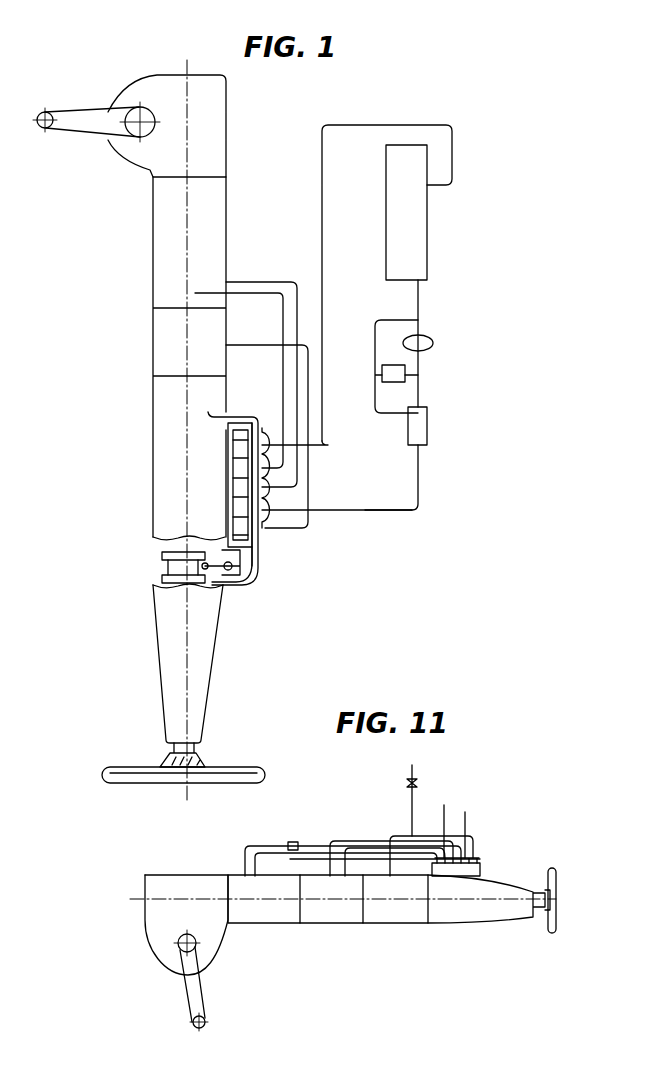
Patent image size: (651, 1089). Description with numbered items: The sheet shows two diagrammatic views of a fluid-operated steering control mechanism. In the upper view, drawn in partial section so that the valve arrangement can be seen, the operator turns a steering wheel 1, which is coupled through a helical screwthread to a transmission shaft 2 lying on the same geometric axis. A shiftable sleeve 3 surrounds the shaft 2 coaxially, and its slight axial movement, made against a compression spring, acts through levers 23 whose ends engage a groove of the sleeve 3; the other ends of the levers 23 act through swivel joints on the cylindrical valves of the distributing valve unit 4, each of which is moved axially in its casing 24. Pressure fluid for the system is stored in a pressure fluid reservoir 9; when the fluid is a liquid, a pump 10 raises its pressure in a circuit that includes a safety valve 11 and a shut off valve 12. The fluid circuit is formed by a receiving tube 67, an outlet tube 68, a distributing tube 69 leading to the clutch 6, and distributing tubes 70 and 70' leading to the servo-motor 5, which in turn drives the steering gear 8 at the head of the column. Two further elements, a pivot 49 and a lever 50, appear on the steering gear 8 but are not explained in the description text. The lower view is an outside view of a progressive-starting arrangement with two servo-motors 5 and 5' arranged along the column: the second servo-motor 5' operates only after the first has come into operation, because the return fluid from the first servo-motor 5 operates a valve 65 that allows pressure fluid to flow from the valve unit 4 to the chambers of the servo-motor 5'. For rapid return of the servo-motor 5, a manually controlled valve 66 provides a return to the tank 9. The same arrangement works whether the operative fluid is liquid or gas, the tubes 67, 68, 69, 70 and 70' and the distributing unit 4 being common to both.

In FIG. 1, the steering wheel 1 is at (226, 766).
In FIG. 11, the steering wheel 1 is at (552, 888).
In FIG. 1, the transmission shaft 2 is at (148, 548).
In FIG. 1, the shiftable sleeve 3 is at (214, 578).
In FIG. 1, the distributing valve unit 4 is at (236, 416).
In FIG. 11, the distributing valve unit 4 is at (486, 866).
In FIG. 1, the servo-motor 5 is at (215, 357).
In FIG. 11, the servo-motor 5 is at (331, 917).
In FIG. 11, the second servo-motor 5' is at (222, 917).
In FIG. 1, the clutch 6 is at (232, 358).
In FIG. 11, the clutch 6 is at (400, 906).
In FIG. 1, the steering gear 8 is at (228, 117).
In FIG. 11, the steering gear 8 is at (172, 955).
In FIG. 1, the pressure fluid reservoir 9 is at (413, 225).
In FIG. 1, the pump 10 is at (432, 350).
In FIG. 1, the safety valve 11 is at (392, 365).
In FIG. 1, the shut off valve 12 is at (427, 432).
In FIG. 1, the levers 23 is at (242, 570).
In FIG. 1, the casing 24 is at (262, 524).
In FIG. 1, the pivot 49 is at (133, 112).
In FIG. 1, the lever 50 is at (84, 130).
In FIG. 11, the valve 65 is at (293, 841).
In FIG. 11, the manually controlled valve 66 is at (406, 783).
In FIG. 1, the receiving tube 67 is at (372, 511).
In FIG. 11, the receiving tube 67 is at (466, 828).
In FIG. 1, the outlet tube 68 is at (320, 413).
In FIG. 11, the outlet tube 68 is at (444, 806).
In FIG. 1, the distributing tube 69 is at (300, 525).
In FIG. 11, the distributing tube 69 is at (478, 845).
In FIG. 1, the distributing tube 70 is at (288, 384).
In FIG. 11, the distributing tube 70 is at (383, 840).
In FIG. 1, the distributing tube 70' is at (290, 436).
In FIG. 11, the distributing tube 70' is at (352, 840).